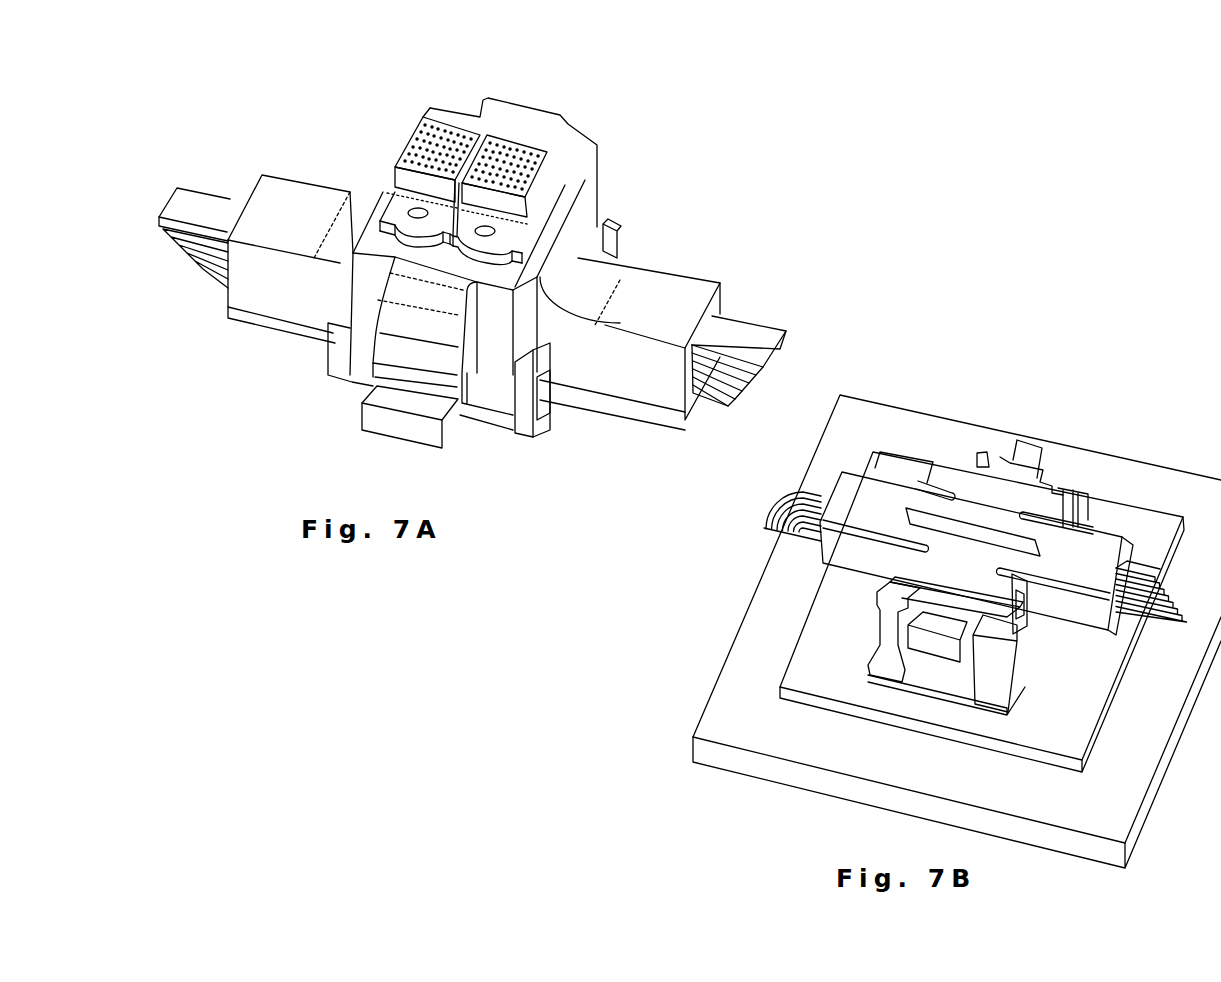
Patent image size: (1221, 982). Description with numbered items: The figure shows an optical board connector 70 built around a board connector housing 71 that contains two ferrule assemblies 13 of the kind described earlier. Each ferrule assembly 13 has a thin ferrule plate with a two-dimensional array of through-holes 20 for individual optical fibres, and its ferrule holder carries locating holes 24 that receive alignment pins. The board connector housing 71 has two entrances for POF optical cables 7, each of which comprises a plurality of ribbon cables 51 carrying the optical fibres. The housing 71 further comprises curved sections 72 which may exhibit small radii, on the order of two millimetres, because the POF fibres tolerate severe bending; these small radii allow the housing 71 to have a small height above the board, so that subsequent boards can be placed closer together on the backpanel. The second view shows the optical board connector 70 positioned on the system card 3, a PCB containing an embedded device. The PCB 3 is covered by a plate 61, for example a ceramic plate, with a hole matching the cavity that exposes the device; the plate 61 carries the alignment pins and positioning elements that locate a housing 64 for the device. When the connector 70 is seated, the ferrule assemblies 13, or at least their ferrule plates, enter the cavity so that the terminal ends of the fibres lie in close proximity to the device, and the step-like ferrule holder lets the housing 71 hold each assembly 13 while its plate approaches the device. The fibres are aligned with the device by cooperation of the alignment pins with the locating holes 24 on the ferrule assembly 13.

In FIG. 7A, the optical board connector 70 is at (618, 108).
In FIG. 7A, the ferrule assembly 13 is at (386, 160).
In FIG. 7A, the through-holes 20 is at (443, 137).
In FIG. 7A, the locating holes 24 is at (417, 209).
In FIG. 7A, the curved sections 72 is at (356, 216).
In FIG. 7B, the curved sections 72 is at (1015, 540).
In FIG. 7A, the ribbon cables 51 is at (187, 200).
In FIG. 7A, the board connector housing 71 is at (363, 323).
In FIG. 7B, the board connector housing 71 is at (963, 477).
In FIG. 7B, the system card 3 is at (760, 608).
In FIG. 7B, the plate 61 is at (813, 660).
In FIG. 7B, the housing 64 is at (1072, 497).
In FIG. 7B, the off-board optical cables 7 is at (756, 493).